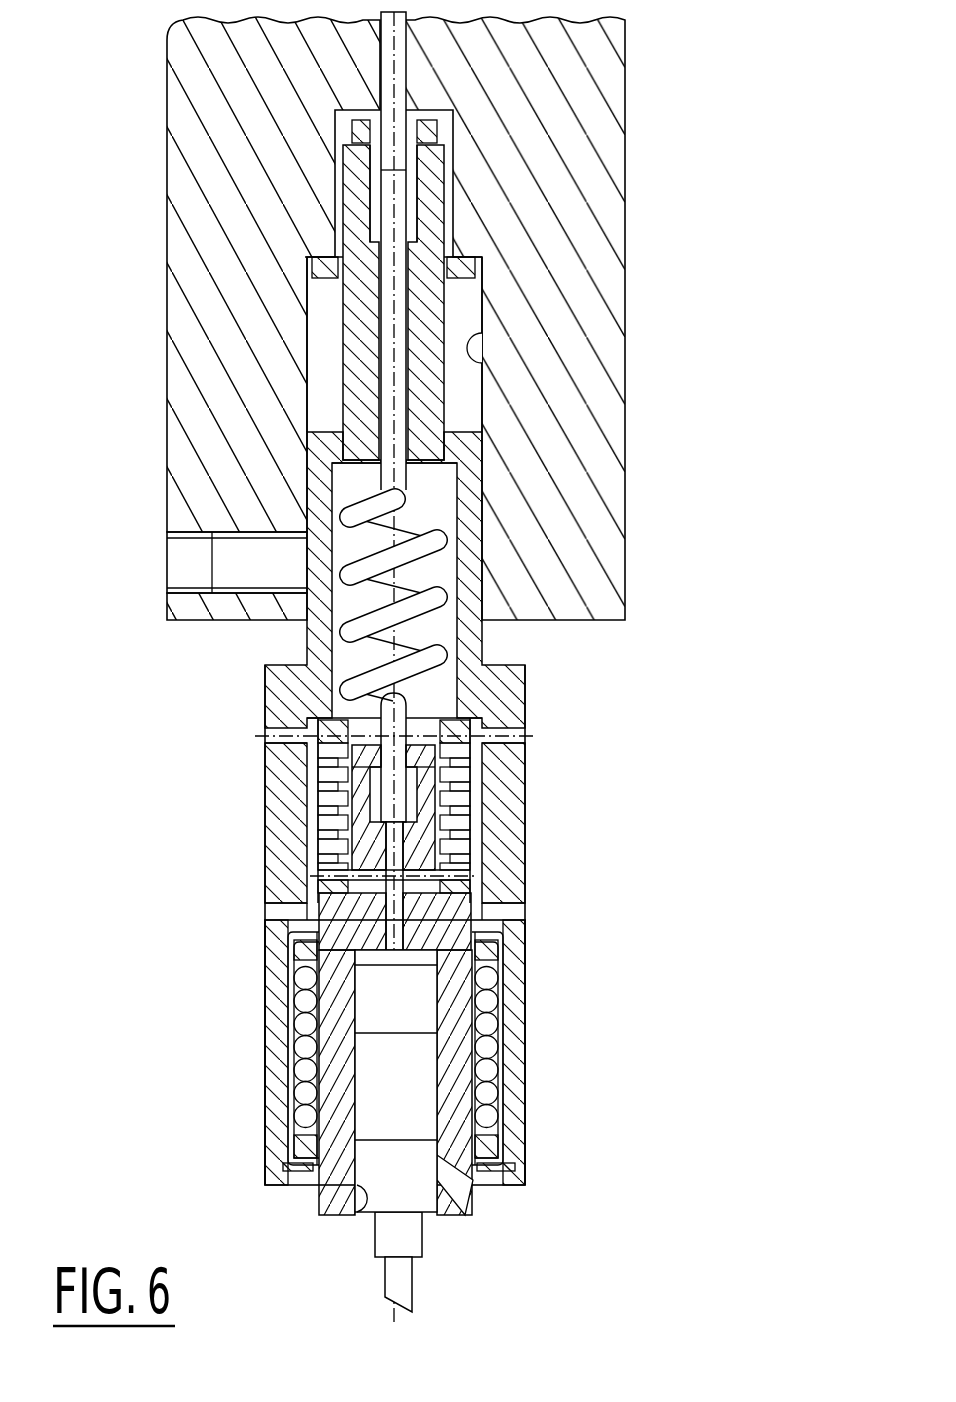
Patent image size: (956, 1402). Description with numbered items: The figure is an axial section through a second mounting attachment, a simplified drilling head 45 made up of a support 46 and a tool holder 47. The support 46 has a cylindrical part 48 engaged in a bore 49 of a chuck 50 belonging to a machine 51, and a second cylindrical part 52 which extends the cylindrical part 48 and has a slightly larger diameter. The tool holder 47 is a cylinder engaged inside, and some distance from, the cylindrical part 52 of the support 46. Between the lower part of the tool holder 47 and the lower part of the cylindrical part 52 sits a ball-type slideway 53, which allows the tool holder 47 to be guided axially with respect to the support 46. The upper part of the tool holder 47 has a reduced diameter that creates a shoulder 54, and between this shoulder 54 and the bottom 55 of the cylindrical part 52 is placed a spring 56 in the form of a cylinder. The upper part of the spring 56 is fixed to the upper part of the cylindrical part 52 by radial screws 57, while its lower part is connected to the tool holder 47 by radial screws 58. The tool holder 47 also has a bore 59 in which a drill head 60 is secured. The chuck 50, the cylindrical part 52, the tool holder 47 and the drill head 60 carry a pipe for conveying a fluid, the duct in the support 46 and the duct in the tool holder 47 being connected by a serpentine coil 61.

The drilling head 45 is at (552, 818).
The support 46 is at (528, 708).
The tool holder 47 is at (316, 1206).
The cylindrical part 48 is at (470, 548).
The bore 49 is at (470, 358).
The chuck 50 is at (592, 255).
The machine 51 is at (630, 166).
The cylindrical part 52 is at (510, 884).
The ball-type slideway 53 is at (502, 1068).
The shoulder 54 is at (335, 888).
The bottom 55 is at (303, 715).
The spring 56 is at (470, 775).
The radial screws 57 is at (283, 745).
The radial screws 58 is at (472, 874).
The bore 59 is at (368, 1192).
The drill head 60 is at (405, 1290).
The serpentine coil 61 is at (432, 608).